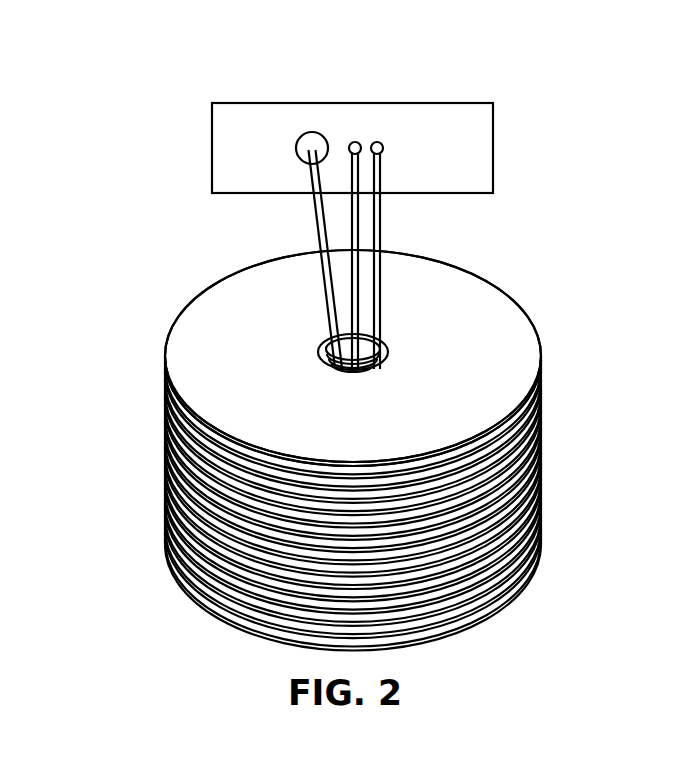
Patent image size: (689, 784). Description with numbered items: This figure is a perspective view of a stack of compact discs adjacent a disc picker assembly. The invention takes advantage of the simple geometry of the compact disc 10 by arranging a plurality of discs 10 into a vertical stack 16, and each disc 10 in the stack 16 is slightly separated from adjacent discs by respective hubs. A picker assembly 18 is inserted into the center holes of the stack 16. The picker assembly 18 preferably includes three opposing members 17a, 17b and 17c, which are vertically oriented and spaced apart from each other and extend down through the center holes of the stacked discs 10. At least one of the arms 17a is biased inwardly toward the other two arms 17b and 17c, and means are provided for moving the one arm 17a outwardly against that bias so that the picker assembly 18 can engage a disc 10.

The compact disc 10 is at (525, 350).
The vertical stack 16 is at (140, 420).
The arm 17a is at (315, 215).
The arm 17b is at (352, 171).
The arm 17c is at (381, 171).
The picker assembly 18 is at (524, 162).